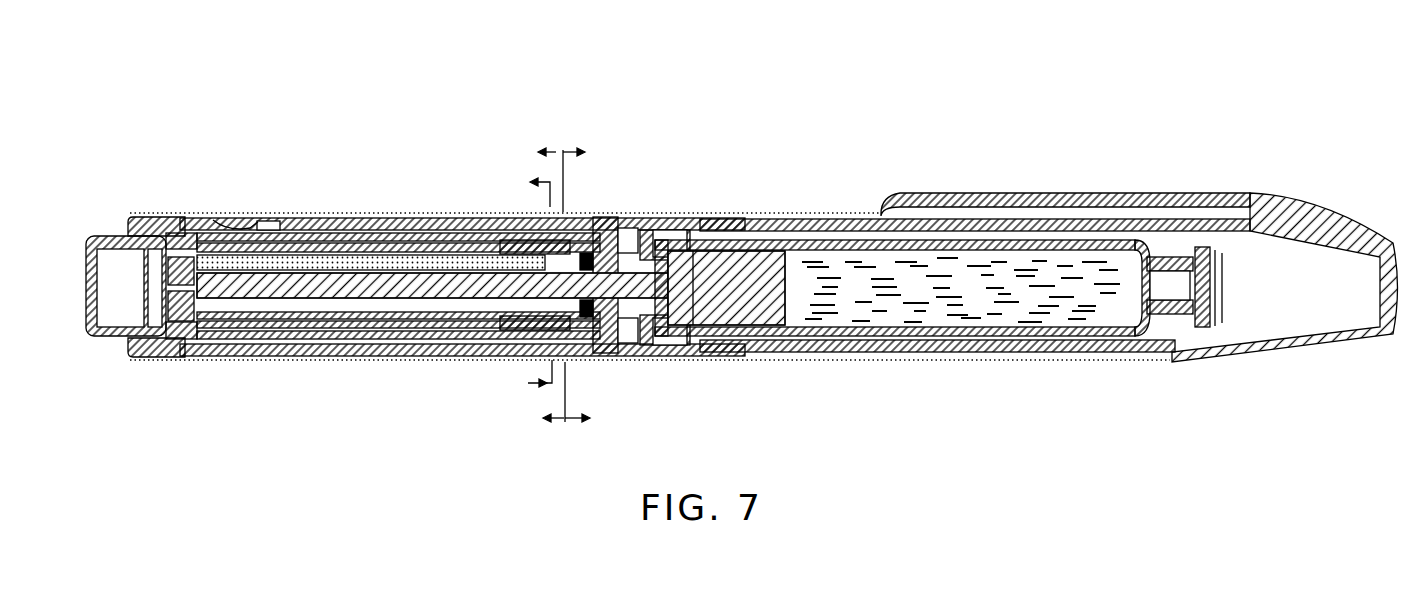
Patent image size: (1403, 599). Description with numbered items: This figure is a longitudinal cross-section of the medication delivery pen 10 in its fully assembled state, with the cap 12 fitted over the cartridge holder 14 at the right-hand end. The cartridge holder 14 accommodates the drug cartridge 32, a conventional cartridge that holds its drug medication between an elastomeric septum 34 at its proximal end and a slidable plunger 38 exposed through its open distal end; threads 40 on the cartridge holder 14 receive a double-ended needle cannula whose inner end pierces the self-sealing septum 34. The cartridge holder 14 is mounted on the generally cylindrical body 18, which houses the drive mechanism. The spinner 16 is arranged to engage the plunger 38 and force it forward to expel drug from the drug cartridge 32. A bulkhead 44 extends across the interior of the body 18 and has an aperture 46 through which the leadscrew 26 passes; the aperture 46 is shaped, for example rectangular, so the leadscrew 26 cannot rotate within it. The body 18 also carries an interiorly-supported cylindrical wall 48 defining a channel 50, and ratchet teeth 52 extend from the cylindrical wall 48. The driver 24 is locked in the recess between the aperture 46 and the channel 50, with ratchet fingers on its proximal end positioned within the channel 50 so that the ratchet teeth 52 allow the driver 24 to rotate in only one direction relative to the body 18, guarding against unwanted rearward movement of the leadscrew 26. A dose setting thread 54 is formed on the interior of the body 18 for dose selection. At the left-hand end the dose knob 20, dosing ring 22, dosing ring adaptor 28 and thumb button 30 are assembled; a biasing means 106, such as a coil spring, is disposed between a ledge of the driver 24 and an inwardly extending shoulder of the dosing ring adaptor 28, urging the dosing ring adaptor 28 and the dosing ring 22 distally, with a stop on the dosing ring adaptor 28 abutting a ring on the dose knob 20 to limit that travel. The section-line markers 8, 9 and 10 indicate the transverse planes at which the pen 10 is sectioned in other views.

The cap 12 is at (1252, 193).
The cartridge holder 14 is at (1226, 312).
The spinner 16 is at (680, 357).
The body 18 is at (393, 214).
The dose knob 20 is at (163, 358).
The dosing ring 22 is at (527, 322).
The driver 24 is at (432, 318).
The leadscrew 26 is at (383, 300).
The dosing ring adaptor 28 is at (272, 338).
The thumb button 30 is at (88, 334).
The drug cartridge 32 is at (943, 355).
The elastomeric septum 34 is at (1192, 287).
The slidable plunger 38 is at (788, 276).
The threads 40 is at (1208, 257).
The bulkhead 44 is at (648, 231).
The aperture 46 is at (647, 358).
The cylindrical wall 48 is at (583, 354).
The channel 50 is at (601, 231).
The ratchet teeth 52 is at (373, 212).
The dose setting thread 54 is at (237, 226).
The biasing means 106 is at (217, 353).
The section line 8- 8 is at (478, 288).
The section line 9- 9 is at (543, 287).
The medication delivery pen 10 is at (593, 287).